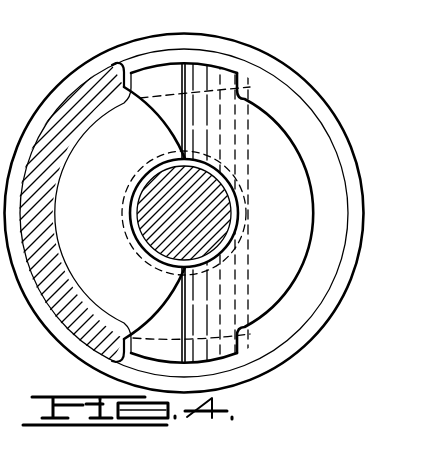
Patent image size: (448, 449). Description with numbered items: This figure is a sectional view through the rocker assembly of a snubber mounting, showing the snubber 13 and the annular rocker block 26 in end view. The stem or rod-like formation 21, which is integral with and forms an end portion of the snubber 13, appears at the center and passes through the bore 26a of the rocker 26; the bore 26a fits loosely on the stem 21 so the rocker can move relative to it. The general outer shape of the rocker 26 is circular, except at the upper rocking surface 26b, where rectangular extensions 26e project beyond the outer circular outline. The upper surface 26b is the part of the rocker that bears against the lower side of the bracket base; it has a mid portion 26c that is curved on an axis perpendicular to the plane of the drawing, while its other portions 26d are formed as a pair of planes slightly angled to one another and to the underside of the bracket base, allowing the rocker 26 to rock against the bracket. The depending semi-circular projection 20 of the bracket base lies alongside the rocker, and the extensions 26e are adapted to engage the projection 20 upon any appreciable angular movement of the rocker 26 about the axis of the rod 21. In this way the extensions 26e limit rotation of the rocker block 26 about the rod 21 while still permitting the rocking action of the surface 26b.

The snubber 13 is at (360, 236).
The depending semi-circular projection 20 is at (67, 318).
The stem or rod-like formation 21 is at (217, 218).
The annular rocker block 26 is at (227, 204).
The bore 26a is at (170, 264).
The upper rocking surface 26b is at (290, 163).
The mid portion of upper surface 26c is at (187, 115).
The other portions of upper surface 26d is at (247, 175).
The rectangular extensions 26e is at (228, 73).